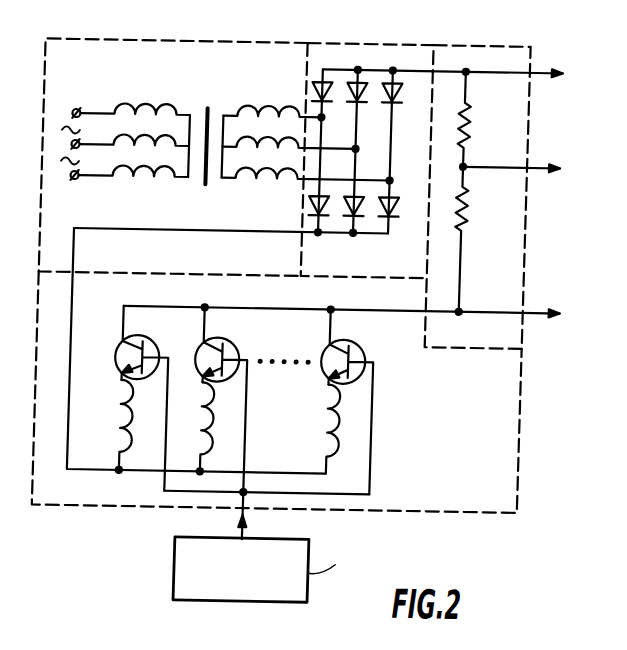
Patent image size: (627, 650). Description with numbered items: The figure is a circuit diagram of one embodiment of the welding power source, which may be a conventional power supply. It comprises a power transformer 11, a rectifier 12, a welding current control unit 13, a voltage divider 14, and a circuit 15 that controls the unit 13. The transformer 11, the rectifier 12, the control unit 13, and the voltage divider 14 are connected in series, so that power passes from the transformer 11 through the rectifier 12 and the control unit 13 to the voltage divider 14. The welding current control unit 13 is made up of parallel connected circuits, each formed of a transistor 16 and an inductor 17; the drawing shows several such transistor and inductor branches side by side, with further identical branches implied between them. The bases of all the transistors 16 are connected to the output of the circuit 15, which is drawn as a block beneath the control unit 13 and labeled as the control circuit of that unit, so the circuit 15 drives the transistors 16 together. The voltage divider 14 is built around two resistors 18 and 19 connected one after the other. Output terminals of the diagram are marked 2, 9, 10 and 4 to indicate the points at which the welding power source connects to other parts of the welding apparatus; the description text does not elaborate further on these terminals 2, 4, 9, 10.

The power transformer 11 is at (36, 218).
The rectifier 12 is at (373, 40).
The welding current control unit 13 is at (277, 392).
The voltage divider 14 is at (373, 220).
The circuit to control the unit 15 is at (342, 548).
The transistor 16 is at (117, 361).
The inductor 17 is at (134, 428).
The resistor 18 is at (465, 124).
The resistor 19 is at (463, 200).
The terminal to element 2 is at (462, 72).
The terminal to element 4 is at (359, 314).
The terminal to element 9 is at (542, 170).
The terminal to element 10 is at (542, 170).